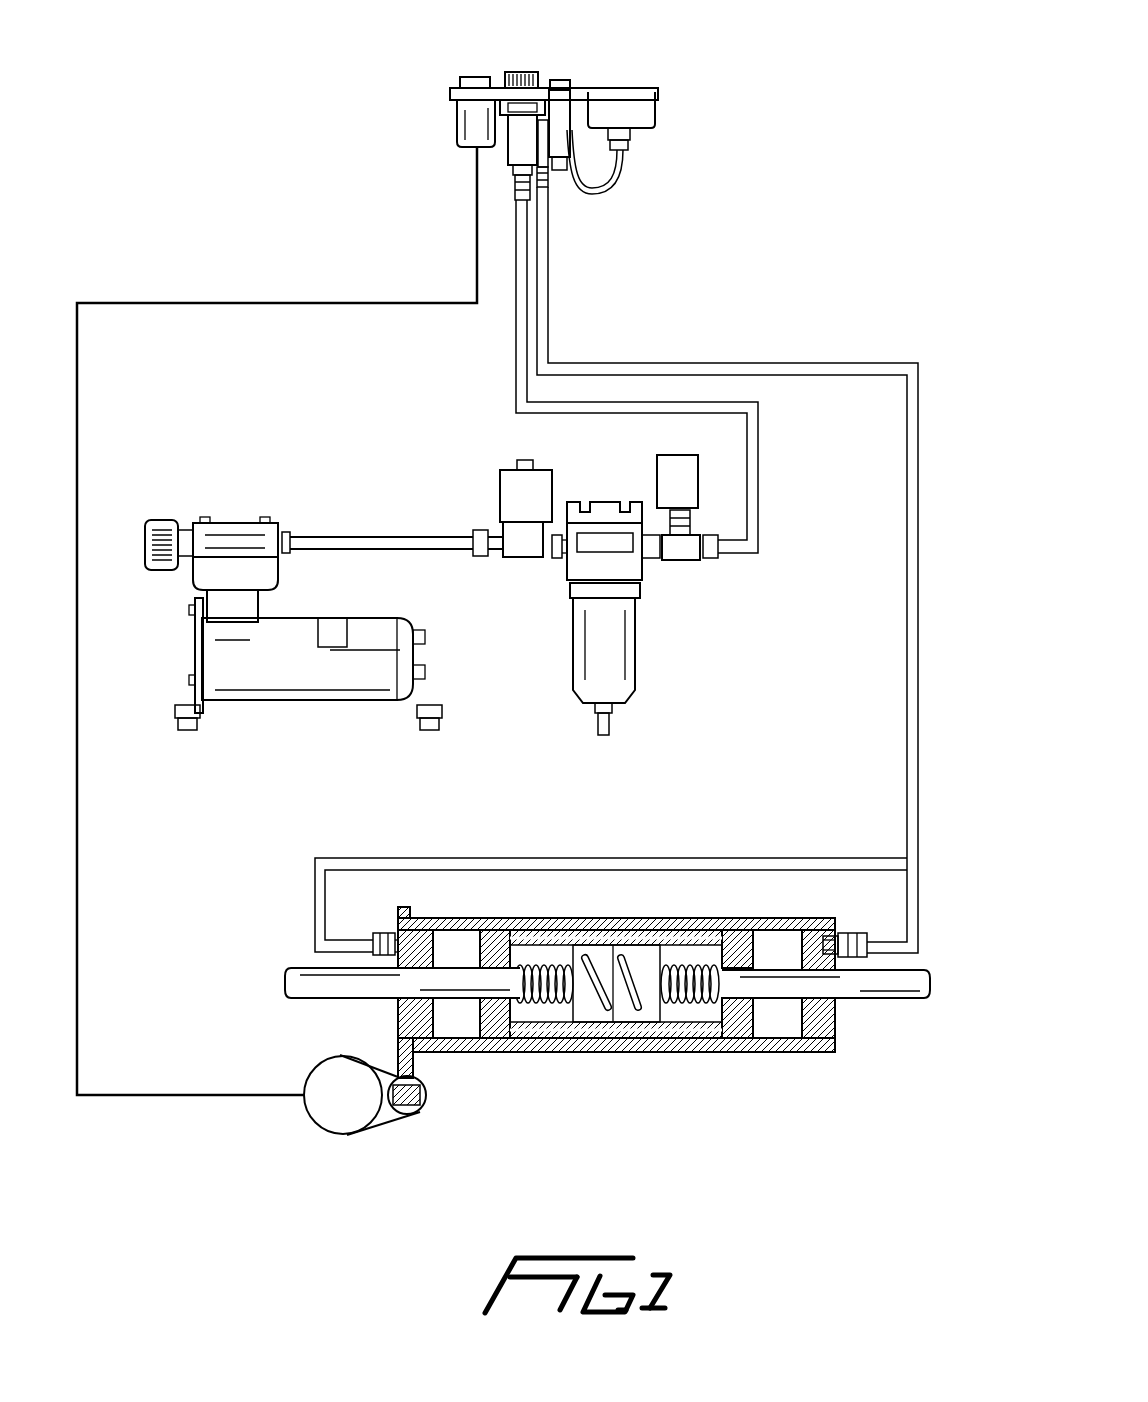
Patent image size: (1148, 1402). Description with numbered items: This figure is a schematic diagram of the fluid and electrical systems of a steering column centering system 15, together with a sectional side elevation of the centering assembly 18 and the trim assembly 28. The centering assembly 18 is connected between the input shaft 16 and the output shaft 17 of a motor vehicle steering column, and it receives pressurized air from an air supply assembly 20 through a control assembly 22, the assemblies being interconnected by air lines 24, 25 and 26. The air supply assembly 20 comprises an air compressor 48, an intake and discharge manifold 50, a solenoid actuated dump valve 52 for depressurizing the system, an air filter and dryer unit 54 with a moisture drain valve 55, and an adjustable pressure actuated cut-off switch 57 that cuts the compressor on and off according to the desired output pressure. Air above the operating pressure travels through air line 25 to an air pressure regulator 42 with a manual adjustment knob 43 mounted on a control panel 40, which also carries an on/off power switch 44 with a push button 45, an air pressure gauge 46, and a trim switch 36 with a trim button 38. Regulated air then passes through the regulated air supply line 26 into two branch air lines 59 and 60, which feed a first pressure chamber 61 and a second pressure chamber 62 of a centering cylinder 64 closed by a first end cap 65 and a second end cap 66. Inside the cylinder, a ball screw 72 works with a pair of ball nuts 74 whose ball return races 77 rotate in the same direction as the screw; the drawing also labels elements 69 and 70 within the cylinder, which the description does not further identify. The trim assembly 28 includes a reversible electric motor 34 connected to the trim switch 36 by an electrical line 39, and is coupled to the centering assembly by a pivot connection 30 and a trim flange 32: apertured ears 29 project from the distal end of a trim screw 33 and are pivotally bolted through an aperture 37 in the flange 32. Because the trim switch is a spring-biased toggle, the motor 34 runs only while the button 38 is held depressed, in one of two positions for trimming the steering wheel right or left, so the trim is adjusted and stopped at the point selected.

The steering column centering system 15 is at (857, 272).
The input shaft 16 is at (915, 1000).
The output shaft 17 is at (290, 985).
The centering assembly 18 is at (568, 999).
The air supply assembly 20 is at (439, 587).
The control assembly 22 is at (546, 130).
The air line 24 is at (413, 535).
The air line 25 is at (758, 495).
The regulated air supply line 26 is at (918, 420).
The trim assembly 28 is at (340, 1131).
The apertured ears 29 is at (345, 1097).
The pivot connection 30 is at (402, 1131).
The trim flange 32 is at (398, 1065).
The trim screw 33 is at (411, 1110).
The reversible electric motor 34 is at (327, 1132).
The trim switch 36 is at (457, 137).
The aperture 37 is at (395, 1112).
The trim button 38 is at (460, 84).
The electrical line 39 is at (78, 912).
The control panel 40 is at (571, 84).
The air pressure regulator 42 is at (508, 160).
The manual adjustment knob 43 is at (510, 75).
The on/off power switch 44 is at (562, 170).
The push button 45 is at (560, 80).
The air pressure gauge 46 is at (640, 85).
The air compressor 48 is at (288, 700).
The intake and discharge manifold 50 is at (230, 520).
The solenoid actuated dump valve 52 is at (500, 490).
The air filter and dryer unit 54 is at (650, 620).
The moisture drain valve 55 is at (612, 720).
The adjustable pressure actuated cut-off switch 57 is at (669, 452).
The branch air line 59 is at (918, 900).
The branch air line 60 is at (765, 858).
The first pressure chamber 61 is at (775, 1025).
The second pressure chamber 62 is at (475, 1030).
The centering cylinder 64 is at (727, 1057).
The first end cap 65 is at (838, 1020).
The second end cap 66 is at (398, 1017).
The piston 69 is at (757, 950).
The piston 70 is at (473, 950).
The ball screw 72 is at (562, 1012).
The ball nuts 74 is at (608, 953).
The ball return races 77 is at (590, 955).